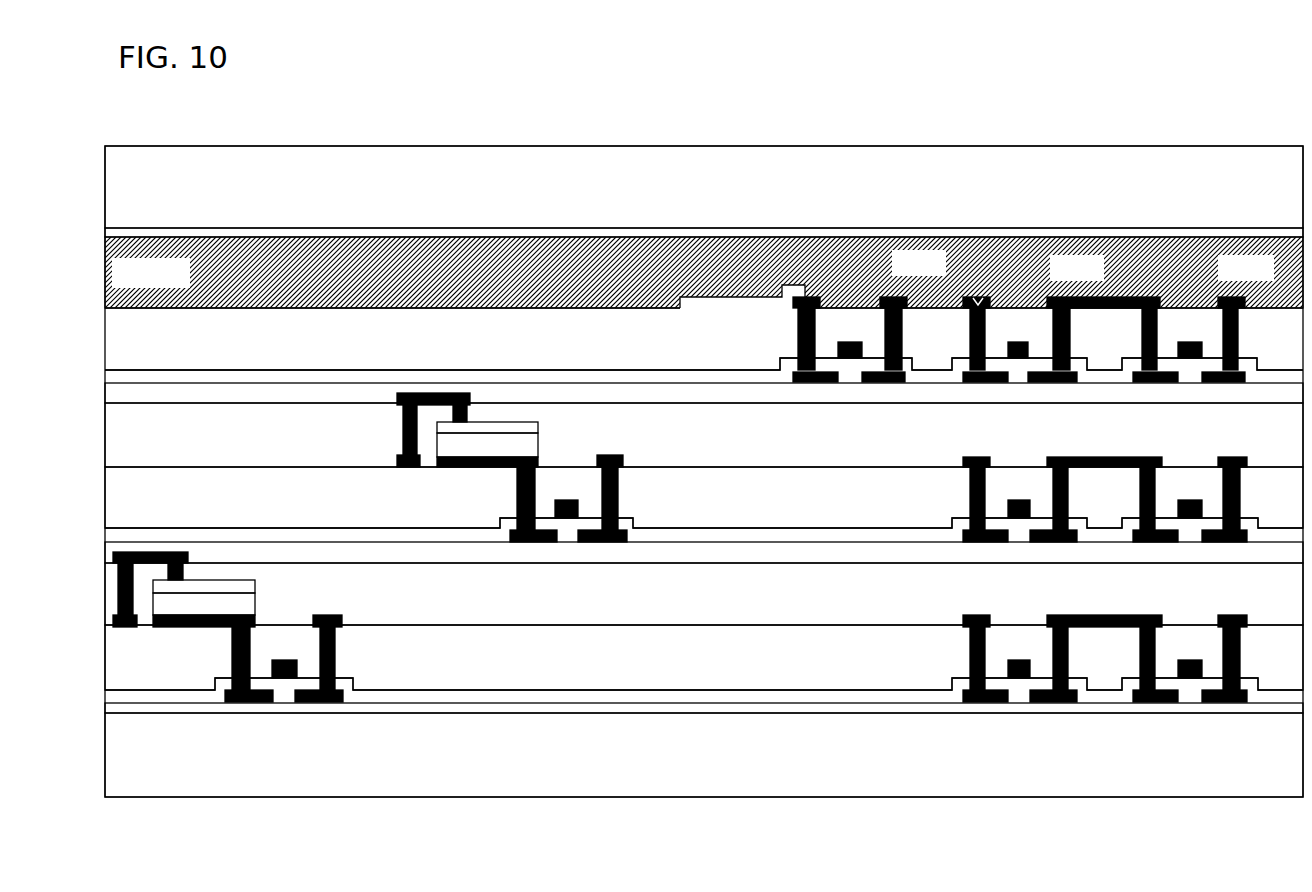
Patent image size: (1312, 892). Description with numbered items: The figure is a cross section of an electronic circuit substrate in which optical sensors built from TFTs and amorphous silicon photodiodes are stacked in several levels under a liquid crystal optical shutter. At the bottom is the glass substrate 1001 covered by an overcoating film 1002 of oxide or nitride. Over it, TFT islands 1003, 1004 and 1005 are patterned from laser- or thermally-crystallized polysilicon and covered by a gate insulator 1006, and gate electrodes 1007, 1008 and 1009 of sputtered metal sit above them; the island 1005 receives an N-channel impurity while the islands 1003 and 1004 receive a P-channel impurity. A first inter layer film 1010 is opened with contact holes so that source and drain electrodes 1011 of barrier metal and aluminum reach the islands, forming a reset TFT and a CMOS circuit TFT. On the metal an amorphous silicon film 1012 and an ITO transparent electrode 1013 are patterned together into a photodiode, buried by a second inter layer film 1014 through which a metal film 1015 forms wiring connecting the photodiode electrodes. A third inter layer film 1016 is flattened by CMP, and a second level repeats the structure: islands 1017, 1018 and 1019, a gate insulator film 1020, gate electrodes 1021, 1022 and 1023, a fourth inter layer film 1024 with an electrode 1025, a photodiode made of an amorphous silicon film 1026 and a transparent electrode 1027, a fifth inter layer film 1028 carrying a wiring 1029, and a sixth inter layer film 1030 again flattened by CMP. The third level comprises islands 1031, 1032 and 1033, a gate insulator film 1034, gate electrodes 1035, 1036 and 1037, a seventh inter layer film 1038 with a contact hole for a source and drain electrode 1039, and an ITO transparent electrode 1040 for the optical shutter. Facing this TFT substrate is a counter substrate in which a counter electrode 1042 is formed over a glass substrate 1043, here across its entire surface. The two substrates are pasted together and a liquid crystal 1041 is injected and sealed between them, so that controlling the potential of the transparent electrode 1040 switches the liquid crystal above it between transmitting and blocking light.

The glass substrate 1001 is at (704, 755).
The overcoating film 1002 is at (704, 730).
The TFT island 1003 is at (284, 728).
The TFT island 1004 is at (1020, 728).
The TFT island 1005 is at (1190, 728).
The gate insulator 1006 is at (704, 669).
The gate electrode 1007 is at (339, 638).
The gate electrode 1008 is at (1048, 630).
The gate electrode 1009 is at (1211, 634).
The first inter layer film 1010 is at (704, 657).
The source and drain electrodes 1011 is at (978, 638).
The amorphous silicon film 1012 is at (232, 638).
The transparent electrode 1013 is at (258, 590).
The second inter layer film 1014 is at (704, 618).
The metal film 1015 is at (170, 557).
The third inter layer film 1016 is at (704, 577).
The island 1017 is at (568, 563).
The island 1018 is at (1020, 570).
The island 1019 is at (1190, 568).
The gate insulator film 1020 is at (704, 504).
The gate electrode 1021 is at (612, 464).
The gate electrode 1022 is at (1065, 464).
The gate electrode 1023 is at (1230, 464).
The fourth inter layer film 1024 is at (704, 497).
The electrode 1025 is at (978, 478).
The amorphous silicon film 1026 is at (480, 488).
The transparent electrode 1027 is at (514, 396).
The fifth inter layer film 1028 is at (704, 435).
The wiring 1029 is at (451, 401).
The sixth inter layer film 1030 is at (704, 369).
The island 1031 is at (849, 410).
The island 1032 is at (1020, 410).
The island 1033 is at (1189, 410).
The gate insulator film 1034 is at (704, 346).
The gate electrode 1035 is at (892, 304).
The gate electrode 1036 is at (1056, 306).
The gate electrode 1037 is at (1226, 306).
The seventh inter layer film 1038 is at (704, 339).
The wiring 1039 is at (970, 282).
The transparent electrode 1040 is at (709, 319).
The liquid crystal 1041 is at (673, 273).
The counter electrode 1042 is at (704, 193).
The glass substrate 1043 is at (704, 187).